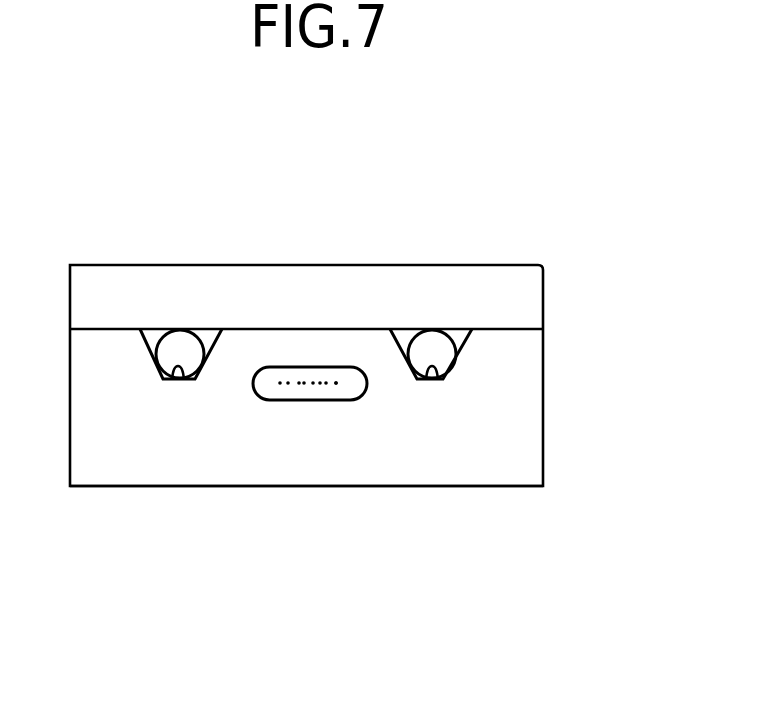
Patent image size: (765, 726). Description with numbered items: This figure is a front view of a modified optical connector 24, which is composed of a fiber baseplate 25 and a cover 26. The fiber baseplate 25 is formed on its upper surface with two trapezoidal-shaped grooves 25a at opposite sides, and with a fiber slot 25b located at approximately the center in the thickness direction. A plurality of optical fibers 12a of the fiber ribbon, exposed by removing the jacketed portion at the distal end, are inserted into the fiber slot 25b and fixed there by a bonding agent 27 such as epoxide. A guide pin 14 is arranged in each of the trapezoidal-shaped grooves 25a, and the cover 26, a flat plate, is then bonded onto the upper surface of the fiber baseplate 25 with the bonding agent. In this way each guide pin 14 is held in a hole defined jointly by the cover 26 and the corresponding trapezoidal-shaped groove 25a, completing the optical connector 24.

The optical connector 24 is at (331, 158).
The cover 26 is at (507, 283).
The fiber baseplate 25 is at (350, 487).
The guide pin 14 is at (176, 348).
The fiber slot 25b is at (282, 399).
The optical fibers 12a is at (313, 380).
The bonding agent 27 is at (336, 380).
The trapezoidal-shaped grooves 25a is at (174, 380).